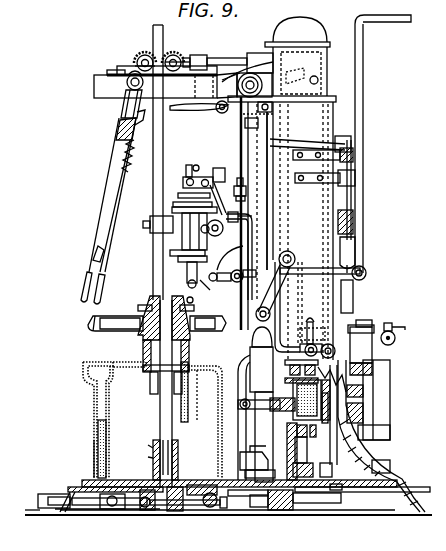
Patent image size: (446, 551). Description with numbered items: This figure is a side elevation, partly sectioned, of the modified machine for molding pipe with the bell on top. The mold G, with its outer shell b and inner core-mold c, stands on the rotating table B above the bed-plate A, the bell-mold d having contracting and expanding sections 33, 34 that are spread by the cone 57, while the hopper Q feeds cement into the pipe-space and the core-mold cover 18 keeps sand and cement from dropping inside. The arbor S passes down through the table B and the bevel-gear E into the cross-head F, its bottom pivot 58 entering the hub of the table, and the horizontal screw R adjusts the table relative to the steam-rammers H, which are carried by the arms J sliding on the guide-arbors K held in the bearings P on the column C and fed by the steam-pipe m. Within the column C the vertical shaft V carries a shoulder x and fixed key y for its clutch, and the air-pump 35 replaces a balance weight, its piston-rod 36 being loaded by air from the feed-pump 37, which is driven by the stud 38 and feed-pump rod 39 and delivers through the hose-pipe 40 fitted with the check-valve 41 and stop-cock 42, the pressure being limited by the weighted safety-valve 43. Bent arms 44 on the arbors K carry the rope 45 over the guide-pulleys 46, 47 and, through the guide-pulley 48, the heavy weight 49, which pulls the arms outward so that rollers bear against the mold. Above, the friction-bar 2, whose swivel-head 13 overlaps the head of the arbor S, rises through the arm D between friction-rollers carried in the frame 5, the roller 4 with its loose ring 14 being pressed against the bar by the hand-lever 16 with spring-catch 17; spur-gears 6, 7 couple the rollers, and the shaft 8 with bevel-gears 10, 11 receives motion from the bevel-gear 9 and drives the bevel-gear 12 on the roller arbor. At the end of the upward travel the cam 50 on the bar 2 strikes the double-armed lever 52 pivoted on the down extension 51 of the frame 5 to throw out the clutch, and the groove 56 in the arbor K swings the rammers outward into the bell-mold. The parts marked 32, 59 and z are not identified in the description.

The friction-bar 2 is at (166, 162).
The friction-roller 4 is at (138, 58).
The horizontal frame 5 is at (190, 68).
The spur-gear 6 is at (145, 51).
The spur-gear 7 is at (173, 54).
The horizontal shaft 8 is at (255, 123).
The bevel-gear 9 is at (260, 124).
The bevel-gear 10 is at (282, 74).
The bevel-gear 11 is at (215, 56).
The bevel-gear 12 is at (247, 63).
The swivel-head 13 is at (124, 98).
The loose ring 14 is at (258, 186).
The hand-lever 16 is at (108, 211).
The spring-catch 17 is at (134, 145).
The metal cover 18 is at (195, 392).
The lever 32 is at (276, 282).
The contracting and expanding section 33 is at (162, 322).
The contracting and expanding section 34 is at (246, 218).
The air-pump 35 is at (331, 421).
The piston-rod 36 is at (312, 303).
The feed-pump 37 is at (193, 213).
The stud 38 is at (209, 285).
The feed-pump rod 39 is at (187, 275).
The hose-pipe 40 is at (264, 283).
The check-valve 41 is at (219, 228).
The stop-cock 42 is at (272, 317).
The weighted safety-valve 43 is at (379, 347).
The bent arm 44 is at (310, 144).
The rope 45 is at (342, 190).
The guide-pulley 46 is at (337, 178).
The guide-pulley 47 is at (336, 156).
The guide-pulley 48 is at (358, 241).
The weight 49 is at (376, 164).
The cam 50 is at (155, 229).
The down extension 51 is at (220, 112).
The double-armed lever 52 is at (199, 114).
The groove 56 is at (250, 189).
The cone 57 is at (147, 300).
The bottom pivot 58 is at (145, 455).
The bearing 59 is at (146, 442).
The bed-plate A is at (253, 446).
The table B is at (115, 487).
The column C is at (305, 204).
The arm D is at (165, 82).
The bevel-gear E is at (92, 512).
The cross-head F is at (188, 486).
The mold G is at (114, 412).
The steam-rammer H is at (204, 389).
The arm J is at (219, 208).
The guide-arbor K is at (250, 288).
The bearing P is at (261, 394).
The screw R is at (113, 498).
The arbor S is at (166, 393).
The vertical shaft V is at (307, 420).
The outer mold b is at (85, 438).
The core-mold c is at (160, 405).
The bell-mold d is at (152, 303).
The steam-pipe m is at (298, 255).
The shoulder x is at (356, 416).
The fixed key y is at (266, 440).
The rod z is at (245, 499).
The hopper Q is at (257, 462).